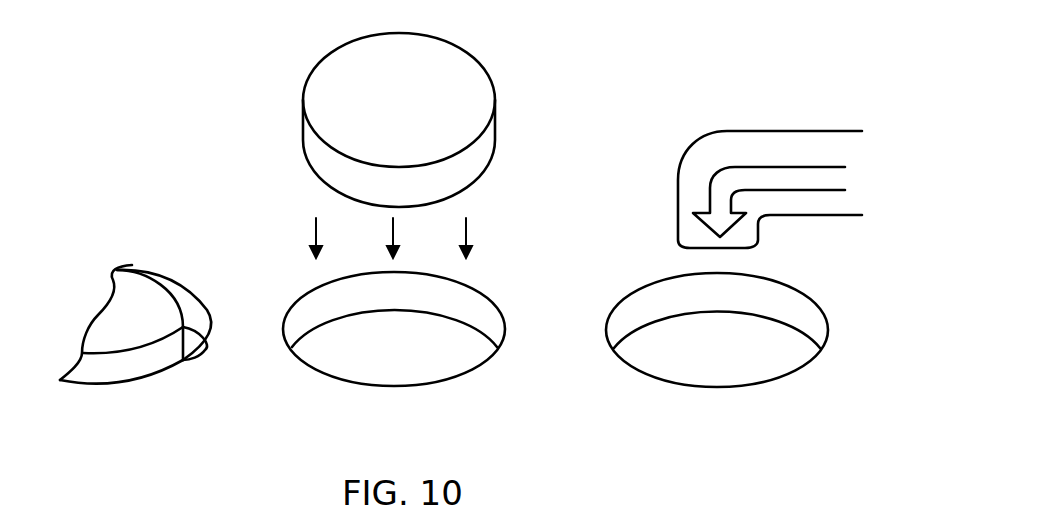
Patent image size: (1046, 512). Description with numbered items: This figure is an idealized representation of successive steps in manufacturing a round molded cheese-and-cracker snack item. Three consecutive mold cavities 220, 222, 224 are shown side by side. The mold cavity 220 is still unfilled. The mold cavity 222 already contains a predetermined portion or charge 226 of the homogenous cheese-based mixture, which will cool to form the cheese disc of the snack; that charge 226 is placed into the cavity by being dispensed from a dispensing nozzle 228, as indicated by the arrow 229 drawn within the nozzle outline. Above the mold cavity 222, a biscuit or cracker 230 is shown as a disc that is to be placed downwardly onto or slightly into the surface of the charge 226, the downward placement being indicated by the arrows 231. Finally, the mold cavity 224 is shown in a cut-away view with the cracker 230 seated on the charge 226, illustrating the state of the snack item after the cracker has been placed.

The mold cavity 220 is at (770, 390).
The mold cavity 222 is at (390, 393).
The mold cavity 224 is at (118, 390).
The predetermined portion or charge 226 is at (423, 350).
The dispensing nozzle 228 is at (815, 227).
The arrow 229 is at (756, 175).
The biscuit or cracker 230 is at (429, 89).
The arrows 231 is at (476, 231).